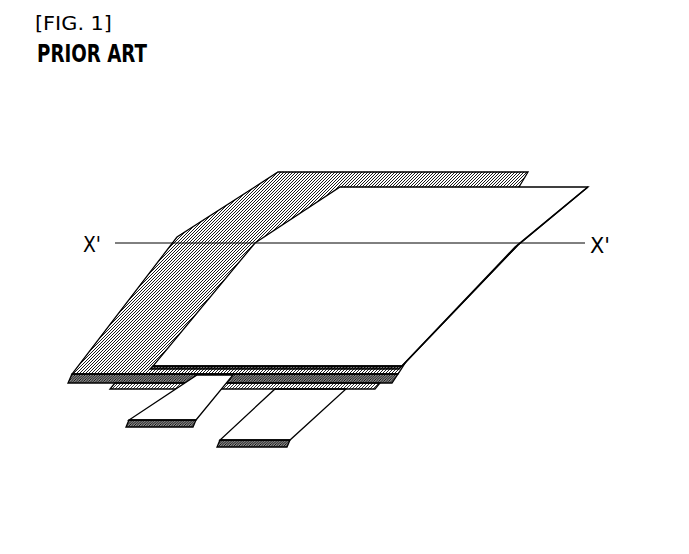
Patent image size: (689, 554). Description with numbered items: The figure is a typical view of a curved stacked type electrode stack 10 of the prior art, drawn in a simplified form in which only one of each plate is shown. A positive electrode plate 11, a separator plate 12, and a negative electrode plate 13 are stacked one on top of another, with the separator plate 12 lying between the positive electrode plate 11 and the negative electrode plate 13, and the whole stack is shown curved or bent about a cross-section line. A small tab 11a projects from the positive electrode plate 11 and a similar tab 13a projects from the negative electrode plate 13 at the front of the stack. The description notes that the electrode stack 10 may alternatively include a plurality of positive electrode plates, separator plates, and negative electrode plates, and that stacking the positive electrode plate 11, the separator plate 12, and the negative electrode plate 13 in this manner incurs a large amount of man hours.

The electrode stack 10 is at (355, 318).
The positive electrode plate 11 is at (279, 459).
The lower plate tab 11a is at (256, 424).
The separator plate 12 is at (432, 172).
The negative electrode plate 13 is at (384, 317).
The upper plate tab 13a is at (152, 407).